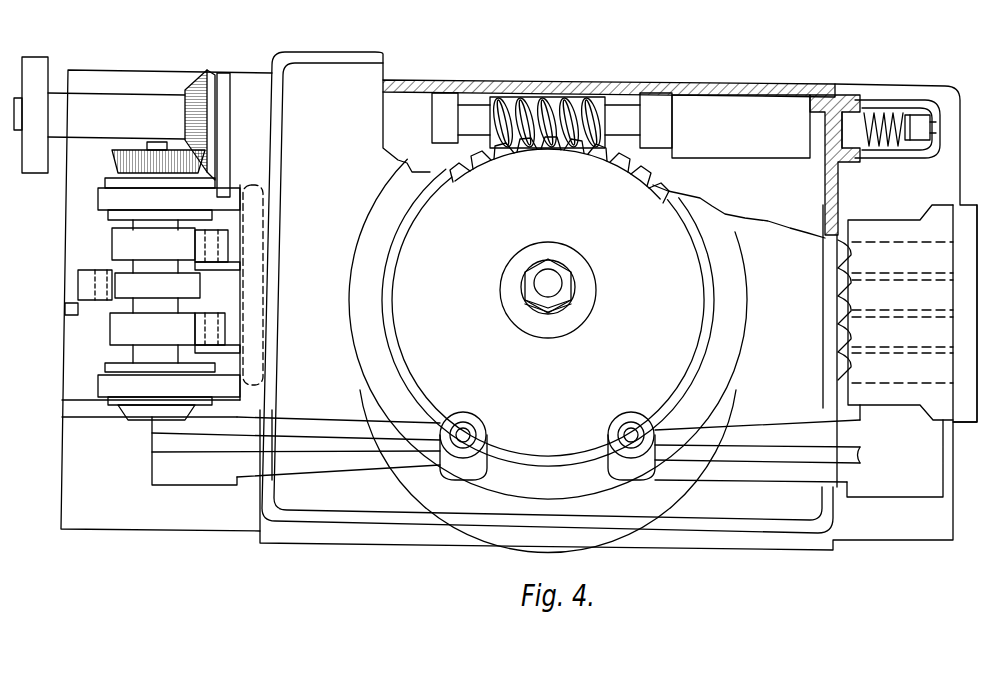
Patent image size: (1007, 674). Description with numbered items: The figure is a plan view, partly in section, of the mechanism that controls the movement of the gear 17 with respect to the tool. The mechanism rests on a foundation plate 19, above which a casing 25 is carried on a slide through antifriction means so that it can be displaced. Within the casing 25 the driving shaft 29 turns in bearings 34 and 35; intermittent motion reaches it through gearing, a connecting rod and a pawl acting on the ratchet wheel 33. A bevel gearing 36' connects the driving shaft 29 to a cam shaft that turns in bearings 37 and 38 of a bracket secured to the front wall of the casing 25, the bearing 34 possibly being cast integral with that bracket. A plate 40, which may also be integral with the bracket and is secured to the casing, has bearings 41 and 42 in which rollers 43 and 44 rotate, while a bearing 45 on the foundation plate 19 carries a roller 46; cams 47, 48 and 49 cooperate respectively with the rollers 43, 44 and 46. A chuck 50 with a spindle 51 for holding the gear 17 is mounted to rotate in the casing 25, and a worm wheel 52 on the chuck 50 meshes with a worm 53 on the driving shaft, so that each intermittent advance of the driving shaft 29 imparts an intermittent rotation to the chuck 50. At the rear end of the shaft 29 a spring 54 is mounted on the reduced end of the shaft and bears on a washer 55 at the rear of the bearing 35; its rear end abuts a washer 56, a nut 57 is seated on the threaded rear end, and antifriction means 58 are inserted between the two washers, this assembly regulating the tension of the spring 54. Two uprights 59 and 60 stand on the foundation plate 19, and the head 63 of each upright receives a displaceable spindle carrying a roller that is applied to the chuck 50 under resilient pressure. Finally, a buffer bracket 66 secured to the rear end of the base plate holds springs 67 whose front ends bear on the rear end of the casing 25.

The gear 17 is at (406, 330).
The foundation plate 19 is at (216, 524).
The casing 25 is at (655, 86).
The driving shaft 29 is at (491, 101).
The ratchet wheel 33 is at (47, 62).
The bearing 34 is at (408, 128).
The bearing 35 is at (716, 108).
The bevel gearing 36' is at (135, 120).
The bearing 37 is at (105, 205).
The bearing 38 is at (105, 385).
The plate 40 is at (264, 218).
The bearing 41 is at (236, 268).
The bearing 42 is at (236, 350).
The roller 43 is at (226, 256).
The roller 44 is at (226, 332).
The bearing 45 is at (70, 312).
The roller 46 is at (95, 285).
The cam 47 is at (122, 240).
The cam 48 is at (200, 290).
The cam 49 is at (118, 330).
The chuck 50 is at (736, 378).
The spindle 51 is at (572, 278).
The worm wheel 52 is at (668, 188).
The worm 53 is at (568, 98).
The spring 54 is at (883, 110).
The washer 55 is at (858, 124).
The washer 56 is at (905, 152).
The nut 57 is at (932, 128).
The antifriction means 58 is at (892, 103).
The upright 59 is at (353, 458).
The upright 60 is at (758, 432).
The head 63 is at (455, 474).
The buffer bracket 66 is at (966, 422).
The springs 67 is at (838, 330).